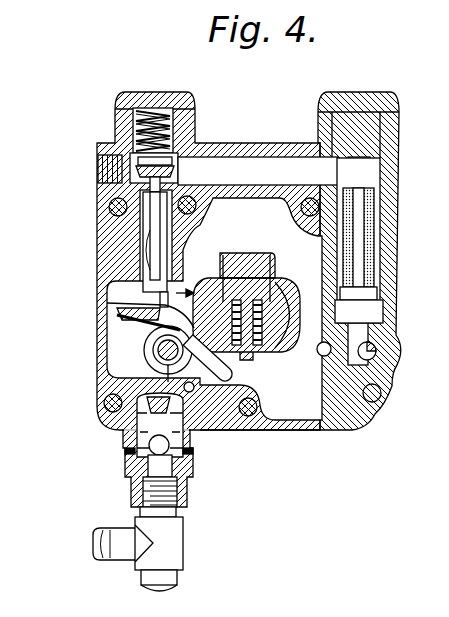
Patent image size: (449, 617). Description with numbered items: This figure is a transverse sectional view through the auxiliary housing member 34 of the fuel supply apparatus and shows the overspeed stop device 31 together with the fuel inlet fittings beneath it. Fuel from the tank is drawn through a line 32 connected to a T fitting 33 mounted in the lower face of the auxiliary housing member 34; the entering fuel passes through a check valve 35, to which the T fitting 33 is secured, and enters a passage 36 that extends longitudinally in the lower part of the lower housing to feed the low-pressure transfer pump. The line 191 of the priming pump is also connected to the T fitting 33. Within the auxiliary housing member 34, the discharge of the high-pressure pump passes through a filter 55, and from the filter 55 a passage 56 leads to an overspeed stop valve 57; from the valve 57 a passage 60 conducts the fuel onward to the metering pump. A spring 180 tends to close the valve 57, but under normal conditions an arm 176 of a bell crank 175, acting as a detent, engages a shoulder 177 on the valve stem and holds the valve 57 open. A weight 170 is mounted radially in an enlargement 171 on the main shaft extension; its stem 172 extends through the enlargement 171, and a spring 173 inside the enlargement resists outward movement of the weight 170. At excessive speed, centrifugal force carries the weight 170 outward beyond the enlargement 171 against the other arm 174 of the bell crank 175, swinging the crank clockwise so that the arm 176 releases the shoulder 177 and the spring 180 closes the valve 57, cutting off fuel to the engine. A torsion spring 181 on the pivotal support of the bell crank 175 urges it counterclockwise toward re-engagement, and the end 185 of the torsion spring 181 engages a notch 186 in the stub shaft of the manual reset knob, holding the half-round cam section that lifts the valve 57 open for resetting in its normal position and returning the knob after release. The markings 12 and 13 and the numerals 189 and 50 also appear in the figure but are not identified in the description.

The spring 180 is at (155, 108).
The overspeed stop valve 57 is at (128, 167).
The passage 56 is at (260, 170).
The passage 60 is at (100, 223).
The pump plunger bore 12 is at (130, 254).
The shoulder 177 is at (172, 243).
The weight 170 is at (247, 256).
The enlargement 171 is at (310, 288).
The filter 55 is at (373, 263).
The fuel flow passage 13 is at (152, 376).
The arm 176 is at (107, 303).
The stop block 189 is at (117, 312).
The end 185 is at (117, 318).
The notch 186 is at (152, 341).
The torsion spring 181 is at (158, 352).
The bell crank 175 is at (107, 380).
The arm 174 is at (222, 373).
The stem 172 is at (257, 358).
The spring 173 is at (270, 353).
The overspeed stop device 31 is at (195, 390).
The passage 36 is at (122, 437).
The check valve 35 is at (197, 463).
The auxiliary housing member 34 is at (303, 433).
The T fitting 33 is at (170, 538).
The line 32 is at (170, 582).
The line 191 is at (113, 557).
The bolt hole 50 is at (385, 351).